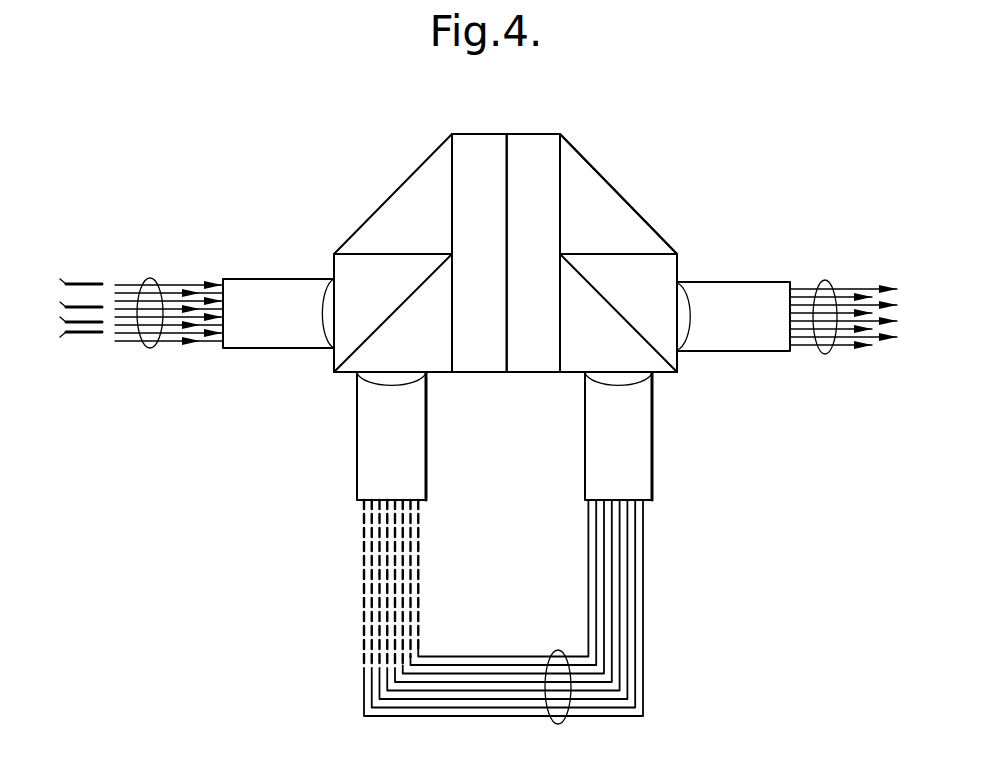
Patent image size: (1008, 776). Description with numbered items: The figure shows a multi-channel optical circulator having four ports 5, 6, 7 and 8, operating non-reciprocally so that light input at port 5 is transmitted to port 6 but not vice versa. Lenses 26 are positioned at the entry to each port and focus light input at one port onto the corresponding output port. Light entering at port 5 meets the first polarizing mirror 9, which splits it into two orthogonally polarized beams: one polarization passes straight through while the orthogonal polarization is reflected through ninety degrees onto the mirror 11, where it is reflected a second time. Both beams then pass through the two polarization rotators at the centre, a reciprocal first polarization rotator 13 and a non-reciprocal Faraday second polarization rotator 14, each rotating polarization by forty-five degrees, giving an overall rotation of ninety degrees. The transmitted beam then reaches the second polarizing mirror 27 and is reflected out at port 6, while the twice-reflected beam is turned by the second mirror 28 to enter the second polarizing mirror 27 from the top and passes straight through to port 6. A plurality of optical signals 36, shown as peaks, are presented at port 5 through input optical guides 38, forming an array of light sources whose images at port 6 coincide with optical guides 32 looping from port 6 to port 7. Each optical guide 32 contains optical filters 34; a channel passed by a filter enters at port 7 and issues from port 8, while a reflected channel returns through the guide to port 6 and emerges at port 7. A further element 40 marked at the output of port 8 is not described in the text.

The port 5 is at (278, 275).
The port 6 is at (665, 467).
The port 7 is at (440, 465).
The port 8 is at (767, 278).
The polarizing mirror 9 is at (382, 275).
The mirror 11 is at (423, 160).
The first polarization rotator 13 is at (477, 134).
The second polarization rotator 14 is at (533, 134).
The lens 26 is at (323, 318).
The second polarizing mirror 27 is at (628, 273).
The second mirror 28 is at (597, 170).
The optical guide 32 is at (557, 650).
The optical filter 34 is at (355, 507).
The optical signals 36 is at (90, 340).
The input optical guide 38 is at (150, 348).
The output beam 40 is at (825, 354).